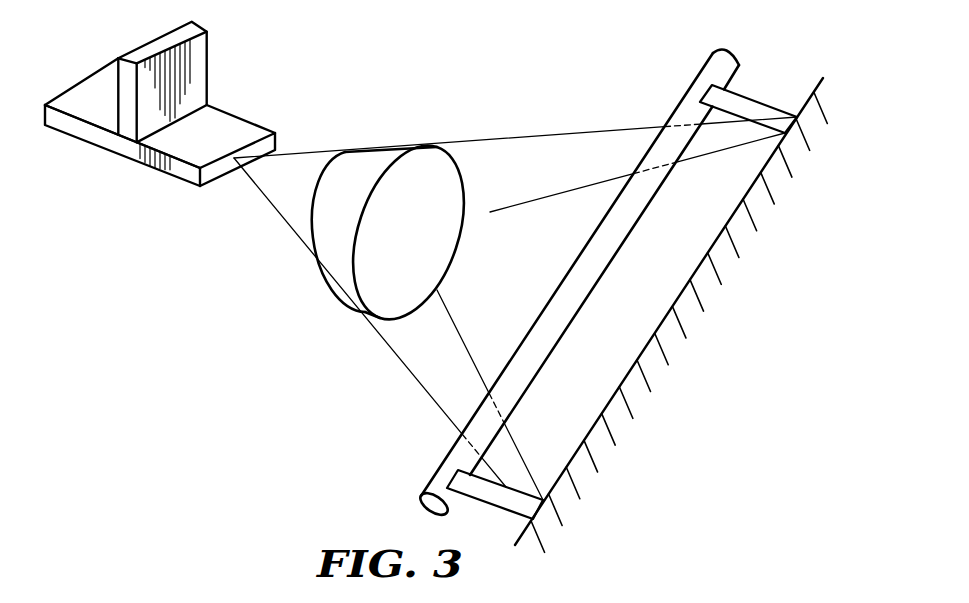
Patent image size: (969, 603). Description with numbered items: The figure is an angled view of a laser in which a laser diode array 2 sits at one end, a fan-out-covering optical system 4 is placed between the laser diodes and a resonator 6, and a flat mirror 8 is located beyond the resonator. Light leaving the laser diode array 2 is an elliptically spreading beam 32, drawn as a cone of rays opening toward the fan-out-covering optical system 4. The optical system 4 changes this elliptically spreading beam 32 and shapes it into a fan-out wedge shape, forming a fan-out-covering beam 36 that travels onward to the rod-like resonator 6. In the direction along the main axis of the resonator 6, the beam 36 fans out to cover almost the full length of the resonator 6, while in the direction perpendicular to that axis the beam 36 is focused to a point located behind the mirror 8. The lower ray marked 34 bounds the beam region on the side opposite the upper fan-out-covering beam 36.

The laser diode array 2 is at (195, 60).
The fan-out-covering optical system 4 is at (330, 257).
The resonator 6 is at (452, 460).
The flat mirror 8 is at (738, 273).
The elliptically spreading beam 32 is at (298, 168).
The lower light beam 34 is at (422, 343).
The fan-out-covering beam 36 is at (548, 157).